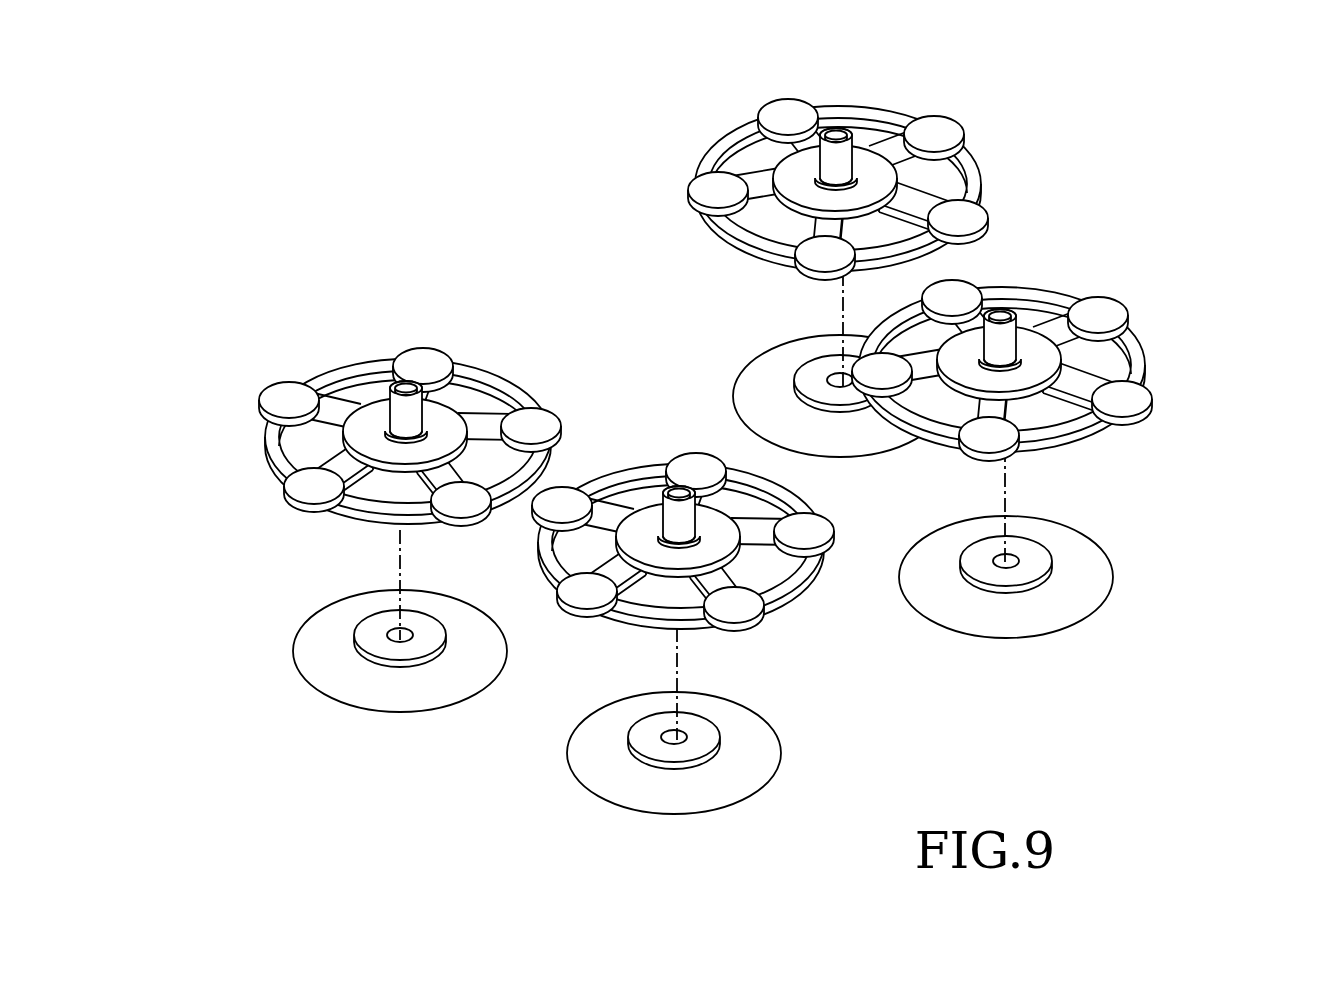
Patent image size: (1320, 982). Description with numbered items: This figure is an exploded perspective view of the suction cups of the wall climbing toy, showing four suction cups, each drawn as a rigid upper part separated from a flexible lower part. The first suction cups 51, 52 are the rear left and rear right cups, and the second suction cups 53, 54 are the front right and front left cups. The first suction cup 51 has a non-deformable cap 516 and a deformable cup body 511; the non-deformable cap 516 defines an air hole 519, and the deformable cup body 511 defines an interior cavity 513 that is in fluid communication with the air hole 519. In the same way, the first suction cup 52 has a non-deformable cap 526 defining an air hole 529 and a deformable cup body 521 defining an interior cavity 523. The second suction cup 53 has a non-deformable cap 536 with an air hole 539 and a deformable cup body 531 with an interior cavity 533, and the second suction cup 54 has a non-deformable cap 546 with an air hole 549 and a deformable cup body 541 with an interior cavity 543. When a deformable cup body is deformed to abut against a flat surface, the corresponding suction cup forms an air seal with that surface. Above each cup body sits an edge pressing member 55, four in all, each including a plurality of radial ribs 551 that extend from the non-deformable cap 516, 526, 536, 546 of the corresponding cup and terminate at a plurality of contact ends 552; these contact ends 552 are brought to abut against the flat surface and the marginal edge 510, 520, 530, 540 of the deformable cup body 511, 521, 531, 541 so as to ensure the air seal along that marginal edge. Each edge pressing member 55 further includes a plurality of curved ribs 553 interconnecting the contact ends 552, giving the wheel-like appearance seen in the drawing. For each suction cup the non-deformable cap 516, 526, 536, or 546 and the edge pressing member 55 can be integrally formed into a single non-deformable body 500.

The first suction cup 51 is at (1190, 455).
The first suction cup 52 is at (650, 313).
The second suction cup 53 is at (213, 515).
The second suction cup 54 is at (552, 772).
The edge pressing member 55 is at (718, 138).
The non-deformable body 500 is at (684, 204).
The marginal edge 510 is at (1110, 612).
The deformable cup body 511 is at (1055, 627).
The interior cavity 513 is at (1004, 655).
The non-deformable cap 516 is at (1100, 350).
The air hole 519 is at (1002, 315).
The marginal edge 520 is at (795, 345).
The deformable cup body 521 is at (760, 362).
The interior cavity 523 is at (765, 386).
The non-deformable cap 526 is at (874, 165).
The air hole 529 is at (838, 134).
The marginal edge 530 is at (310, 630).
The deformable cup body 531 is at (320, 655).
The interior cavity 533 is at (380, 695).
The non-deformable cap 536 is at (373, 415).
The air hole 539 is at (407, 387).
The marginal edge 540 is at (632, 812).
The deformable cup body 541 is at (620, 796).
The interior cavity 543 is at (700, 800).
The non-deformable cap 546 is at (720, 520).
The air hole 549 is at (700, 466).
The radial rib 551 is at (925, 157).
The contact end 552 is at (785, 117).
The curved rib 553 is at (718, 168).